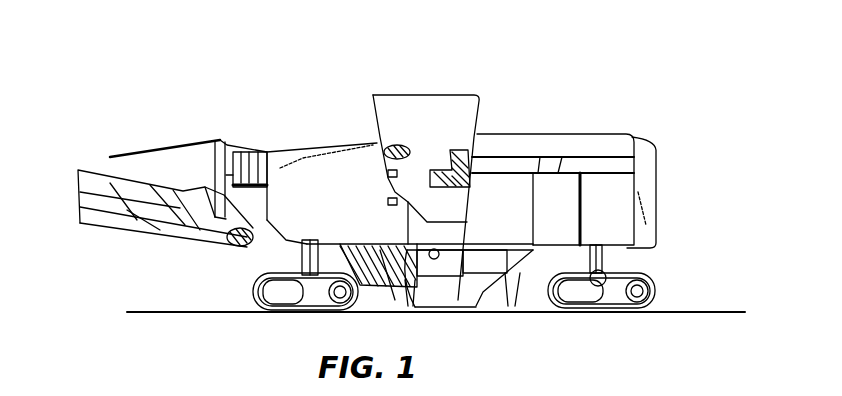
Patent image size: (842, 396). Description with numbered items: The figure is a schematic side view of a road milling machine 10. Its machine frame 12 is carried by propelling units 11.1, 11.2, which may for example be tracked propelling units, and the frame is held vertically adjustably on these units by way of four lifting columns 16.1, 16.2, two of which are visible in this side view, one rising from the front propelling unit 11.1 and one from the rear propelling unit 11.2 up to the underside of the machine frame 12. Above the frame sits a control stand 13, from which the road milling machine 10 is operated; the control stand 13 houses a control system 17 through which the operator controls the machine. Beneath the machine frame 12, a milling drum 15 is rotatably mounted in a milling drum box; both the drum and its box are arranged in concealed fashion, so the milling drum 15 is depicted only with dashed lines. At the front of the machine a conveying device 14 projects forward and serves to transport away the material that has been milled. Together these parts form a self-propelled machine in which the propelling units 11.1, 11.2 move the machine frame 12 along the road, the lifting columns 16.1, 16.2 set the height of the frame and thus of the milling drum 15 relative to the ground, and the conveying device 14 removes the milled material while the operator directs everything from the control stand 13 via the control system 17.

The road milling machine 10 is at (358, 135).
The propelling unit 11.1 is at (253, 293).
The propelling unit 11.2 is at (650, 290).
The machine frame 12 is at (580, 207).
The control stand 13 is at (458, 95).
The conveying device 14 is at (130, 210).
The milling drum 15 is at (483, 296).
The lifting column 16.1 is at (302, 257).
The lifting column 16.2 is at (600, 262).
The control system 17 is at (405, 143).